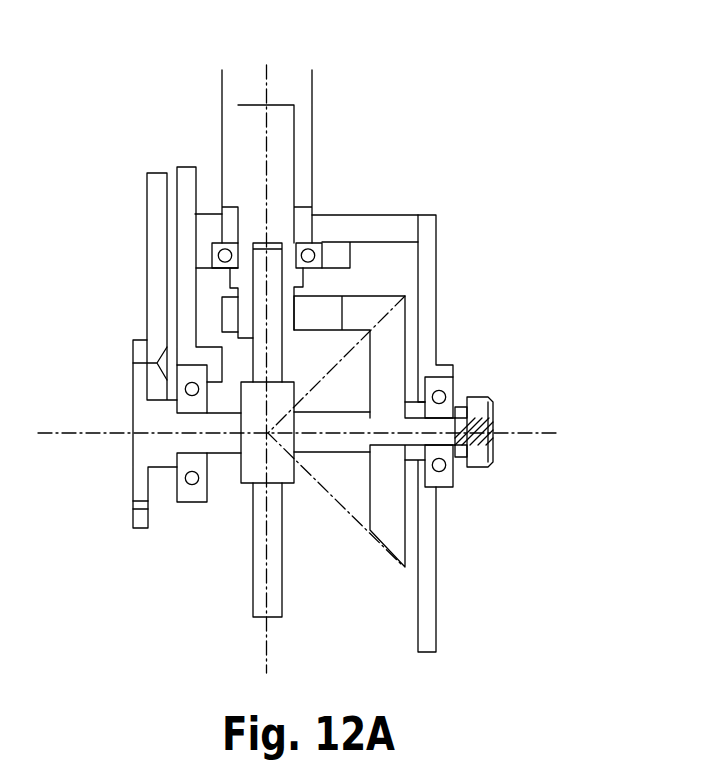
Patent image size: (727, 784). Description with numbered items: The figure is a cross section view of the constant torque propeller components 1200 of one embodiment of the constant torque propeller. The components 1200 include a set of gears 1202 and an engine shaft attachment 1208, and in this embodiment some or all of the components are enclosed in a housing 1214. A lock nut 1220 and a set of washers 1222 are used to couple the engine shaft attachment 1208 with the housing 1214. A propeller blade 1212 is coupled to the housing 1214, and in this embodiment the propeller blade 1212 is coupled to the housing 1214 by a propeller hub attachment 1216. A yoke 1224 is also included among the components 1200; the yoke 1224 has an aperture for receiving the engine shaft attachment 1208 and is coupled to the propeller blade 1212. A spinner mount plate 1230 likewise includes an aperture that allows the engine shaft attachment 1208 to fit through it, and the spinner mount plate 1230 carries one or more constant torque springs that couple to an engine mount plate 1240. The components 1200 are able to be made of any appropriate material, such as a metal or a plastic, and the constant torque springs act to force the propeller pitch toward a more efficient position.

The constant torque propeller components 1200 is at (522, 44).
The set of gears 1202 is at (367, 303).
The engine shaft attachment 1208 is at (132, 477).
The propeller blade 1212 is at (313, 142).
The housing 1214 is at (437, 327).
The propeller hub attachment 1216 is at (320, 243).
The lock nut 1220 is at (493, 465).
The set of washers 1222 is at (415, 462).
The yoke 1224 is at (283, 573).
The spinner mount plate 1230 is at (177, 310).
The engine mount plate 1240 is at (147, 233).